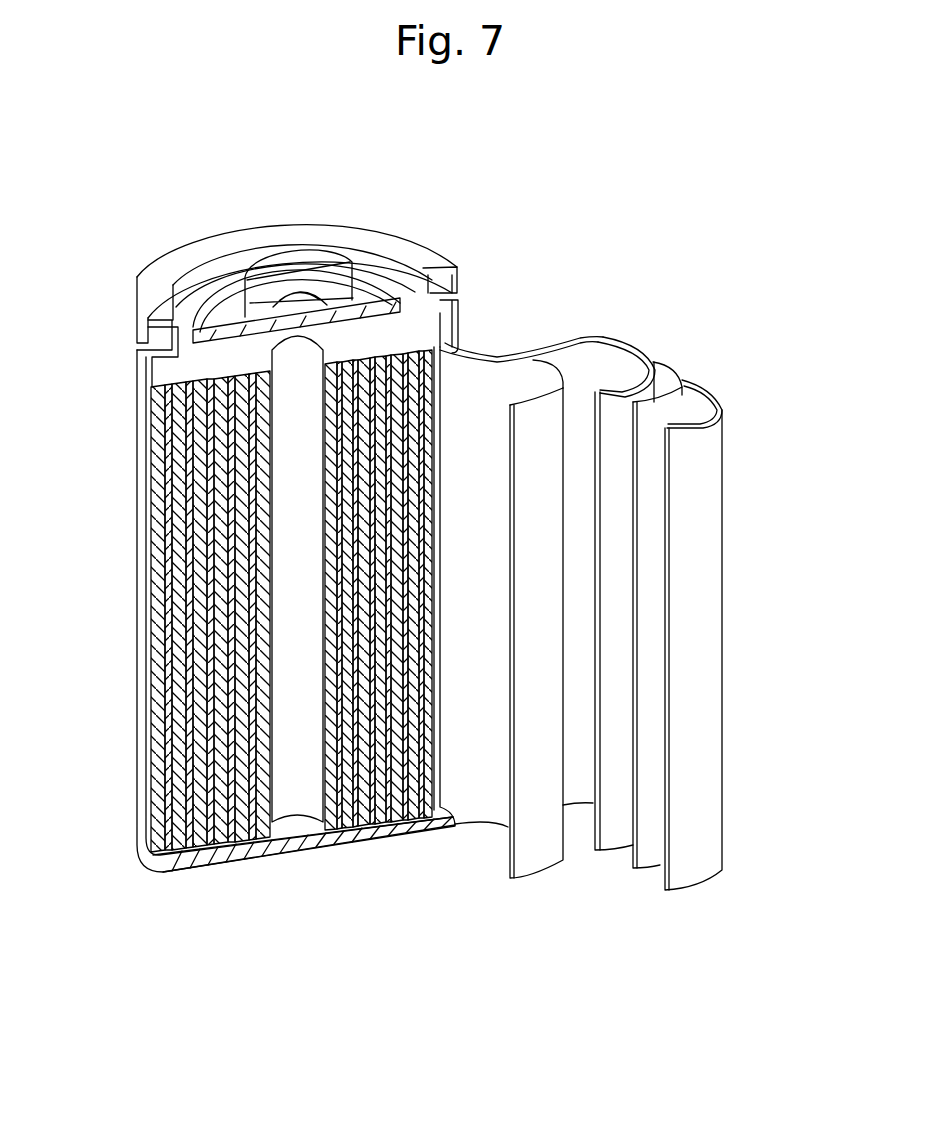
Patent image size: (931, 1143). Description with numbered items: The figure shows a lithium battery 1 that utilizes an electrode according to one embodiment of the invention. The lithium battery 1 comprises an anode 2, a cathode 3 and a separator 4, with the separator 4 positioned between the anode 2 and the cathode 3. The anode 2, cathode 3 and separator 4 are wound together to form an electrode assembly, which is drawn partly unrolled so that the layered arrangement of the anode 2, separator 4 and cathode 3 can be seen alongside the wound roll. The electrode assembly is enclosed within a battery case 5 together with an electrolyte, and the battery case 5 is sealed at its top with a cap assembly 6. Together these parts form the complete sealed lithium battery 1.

The lithium battery 1 is at (688, 318).
The anode 2 is at (709, 500).
The cathode 3 is at (615, 398).
The separator 4 is at (537, 877).
The battery case 5 is at (135, 795).
The cap assembly 6 is at (312, 257).